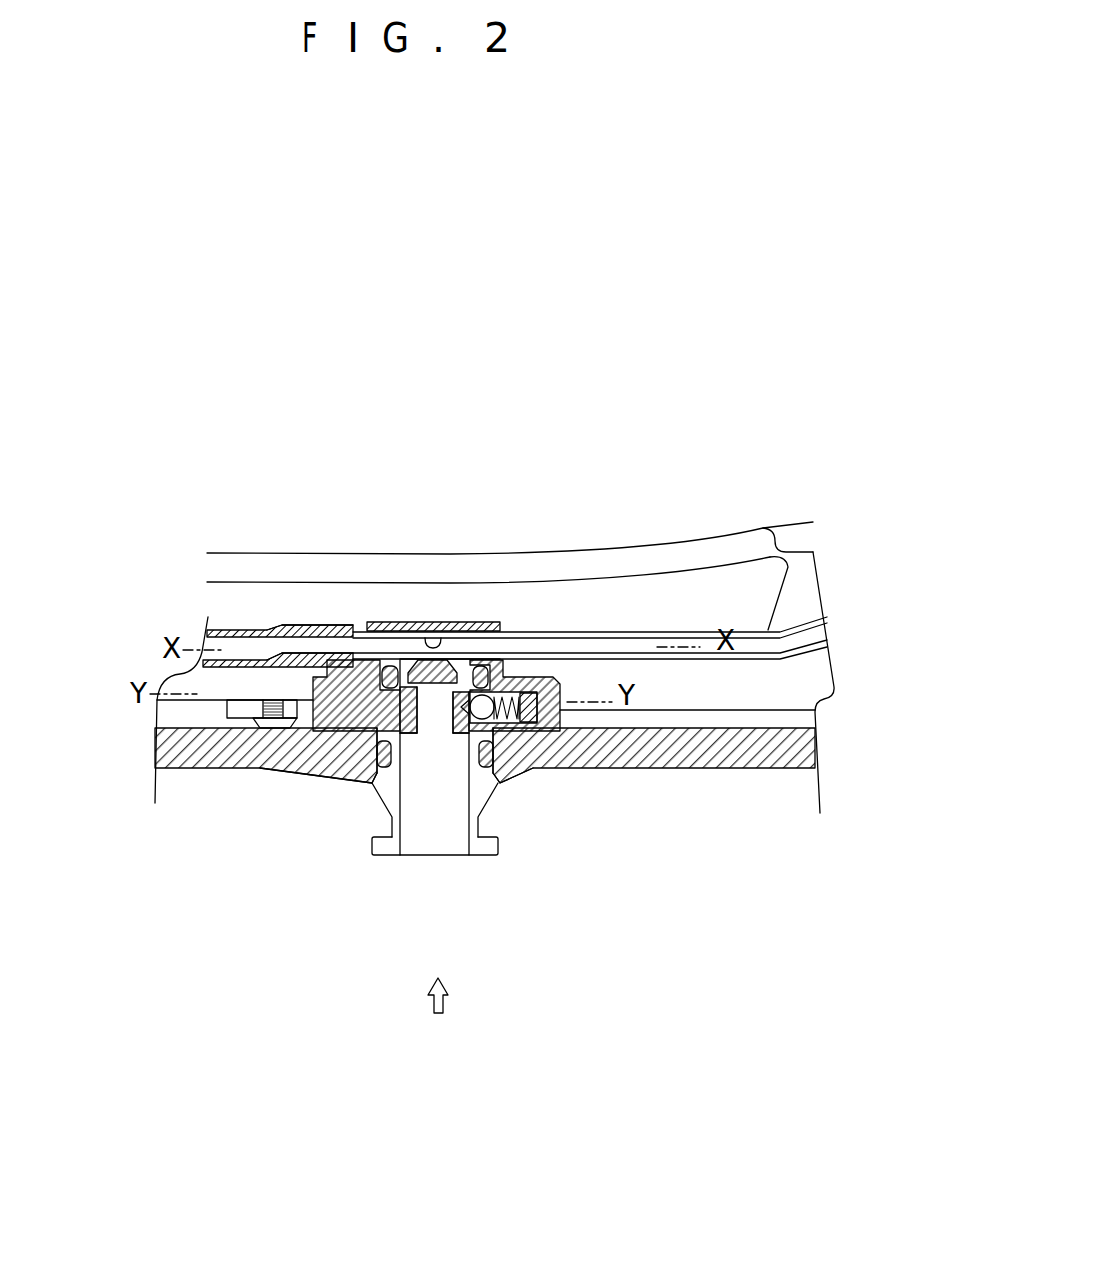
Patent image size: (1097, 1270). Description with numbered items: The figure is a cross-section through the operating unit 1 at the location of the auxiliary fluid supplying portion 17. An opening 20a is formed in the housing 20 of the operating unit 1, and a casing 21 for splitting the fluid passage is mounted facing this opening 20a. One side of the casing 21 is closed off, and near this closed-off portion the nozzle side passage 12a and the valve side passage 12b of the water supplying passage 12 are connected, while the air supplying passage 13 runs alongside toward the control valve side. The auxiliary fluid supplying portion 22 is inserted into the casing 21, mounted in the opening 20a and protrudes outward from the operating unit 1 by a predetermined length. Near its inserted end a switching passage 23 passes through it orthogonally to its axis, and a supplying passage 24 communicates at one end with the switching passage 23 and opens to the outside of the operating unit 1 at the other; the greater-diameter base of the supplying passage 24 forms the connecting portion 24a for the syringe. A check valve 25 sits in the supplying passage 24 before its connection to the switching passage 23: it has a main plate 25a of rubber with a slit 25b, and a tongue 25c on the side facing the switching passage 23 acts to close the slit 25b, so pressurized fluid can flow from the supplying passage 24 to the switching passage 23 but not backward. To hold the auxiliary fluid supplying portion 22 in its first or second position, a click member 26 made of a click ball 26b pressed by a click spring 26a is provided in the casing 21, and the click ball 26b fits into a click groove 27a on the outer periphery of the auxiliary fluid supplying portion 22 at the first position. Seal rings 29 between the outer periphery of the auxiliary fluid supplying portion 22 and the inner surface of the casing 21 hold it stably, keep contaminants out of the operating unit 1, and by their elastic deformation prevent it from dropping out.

The operating unit 1 is at (178, 775).
The water supplying passage 12 is at (327, 618).
The nozzle side passage 12a is at (227, 628).
The valve side passage 12b is at (767, 540).
The air supplying passage 13 is at (258, 553).
The auxiliary fluid supplying portion 17 is at (375, 780).
The housing 20 is at (738, 748).
The opening 20a is at (480, 793).
The casing 21 is at (347, 697).
The auxiliary fluid supplying portion 22 is at (487, 872).
The switching passage 23 is at (468, 633).
The supplying passage 24 is at (437, 727).
The connecting portion 24a is at (380, 814).
The check valve 25 is at (373, 697).
The main plate 25a is at (483, 657).
The slit 25b is at (398, 685).
The tongue 25c is at (440, 655).
The click member 26 is at (522, 684).
The click spring 26a is at (536, 700).
The click ball 26b is at (535, 772).
The click groove 27a is at (466, 700).
The seal ring 29 is at (503, 677).